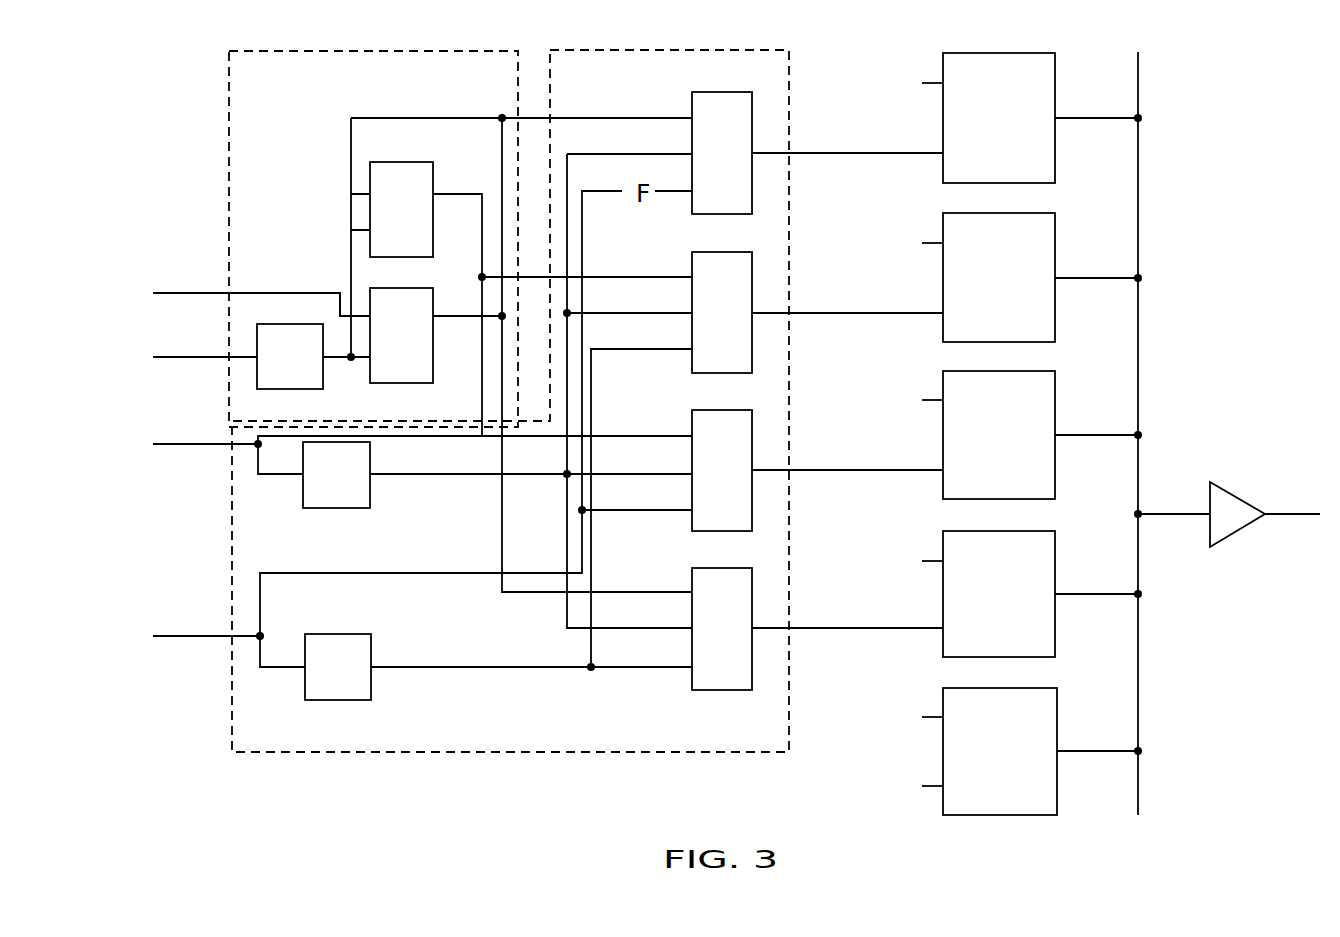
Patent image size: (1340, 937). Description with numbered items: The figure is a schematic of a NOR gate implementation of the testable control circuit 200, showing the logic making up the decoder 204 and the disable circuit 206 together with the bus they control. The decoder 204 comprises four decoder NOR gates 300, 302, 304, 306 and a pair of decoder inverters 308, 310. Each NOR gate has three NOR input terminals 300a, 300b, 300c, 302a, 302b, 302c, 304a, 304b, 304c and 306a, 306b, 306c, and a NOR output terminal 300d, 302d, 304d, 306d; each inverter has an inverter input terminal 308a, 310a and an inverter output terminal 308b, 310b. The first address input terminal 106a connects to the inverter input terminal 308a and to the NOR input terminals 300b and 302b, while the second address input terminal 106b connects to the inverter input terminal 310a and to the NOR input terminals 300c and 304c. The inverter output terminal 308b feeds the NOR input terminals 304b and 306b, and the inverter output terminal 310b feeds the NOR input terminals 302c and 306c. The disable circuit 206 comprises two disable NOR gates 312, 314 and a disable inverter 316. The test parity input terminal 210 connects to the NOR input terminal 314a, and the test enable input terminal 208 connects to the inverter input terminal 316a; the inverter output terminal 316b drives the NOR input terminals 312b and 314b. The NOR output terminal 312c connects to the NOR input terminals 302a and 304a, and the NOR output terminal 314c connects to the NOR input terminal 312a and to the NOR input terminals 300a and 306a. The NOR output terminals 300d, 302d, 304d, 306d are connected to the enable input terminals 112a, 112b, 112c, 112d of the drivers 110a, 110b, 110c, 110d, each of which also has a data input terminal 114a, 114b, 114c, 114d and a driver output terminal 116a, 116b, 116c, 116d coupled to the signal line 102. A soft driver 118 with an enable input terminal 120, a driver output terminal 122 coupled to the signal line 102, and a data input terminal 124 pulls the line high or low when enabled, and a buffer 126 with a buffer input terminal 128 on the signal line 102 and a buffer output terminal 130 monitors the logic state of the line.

The testable control circuit 200 is at (190, 100).
The decoder 204 is at (700, 50).
The disable circuit 206 is at (410, 51).
The test enable input terminal 208 is at (206, 356).
The test parity input terminal 210 is at (196, 292).
The first address input terminal 106a is at (216, 443).
The second address input terminal 106b is at (218, 635).
The signal line 102 is at (1140, 96).
The driver 110a is at (975, 53).
The driver 110b is at (975, 213).
The driver 110c is at (975, 371).
The driver 110d is at (975, 531).
The enable input terminal 112a is at (926, 152).
The enable input terminal 112b is at (926, 312).
The enable input terminal 112c is at (926, 468).
The enable input terminal 112d is at (926, 627).
The data input terminal 114a is at (926, 82).
The data input terminal 114b is at (926, 242).
The data input terminal 114c is at (926, 399).
The data input terminal 114d is at (926, 560).
The driver output terminal 116a is at (1100, 98).
The driver output terminal 116b is at (1100, 258).
The driver output terminal 116c is at (1100, 415).
The driver output terminal 116d is at (1100, 575).
The soft driver 118 is at (975, 688).
The enable input terminal 120 is at (926, 785).
The driver output terminal 122 is at (1082, 738).
The data input terminal 124 is at (926, 716).
The buffer 126 is at (1225, 492).
The buffer input terminal 128 is at (1195, 512).
The buffer output terminal 130 is at (1300, 512).
The first decoder NOR gate 300 is at (700, 92).
The NOR input terminal 300a is at (668, 117).
The NOR input terminal 300b is at (668, 153).
The NOR input terminal 300c is at (668, 190).
The NOR output terminal 300d is at (780, 152).
The second decoder NOR gate 302 is at (755, 252).
The NOR input terminal 302a is at (668, 276).
The NOR input terminal 302b is at (668, 312).
The NOR input terminal 302c is at (668, 348).
The NOR output terminal 302d is at (780, 312).
The third decoder NOR gate 304 is at (755, 410).
The NOR input terminal 304a is at (668, 435).
The NOR input terminal 304b is at (668, 473).
The NOR input terminal 304c is at (668, 509).
The NOR output terminal 304d is at (780, 469).
The fourth decoder NOR gate 306 is at (755, 568).
The NOR input terminal 306a is at (668, 591).
The NOR input terminal 306b is at (668, 627).
The NOR input terminal 306c is at (668, 666).
The NOR output terminal 306d is at (780, 627).
The first decoder inverter 308 is at (372, 446).
The inverter input terminal 308a is at (288, 478).
The inverter output terminal 308b is at (390, 478).
The second decoder inverter 310 is at (372, 638).
The inverter input terminal 310a is at (288, 670).
The inverter output terminal 310b is at (390, 670).
The first disable NOR gate 312 is at (400, 162).
The NOR input terminal 312a is at (350, 194).
The NOR input terminal 312b is at (350, 230).
The NOR output terminal 312c is at (464, 174).
The second disable NOR gate 314 is at (395, 288).
The NOR input terminal 314a is at (340, 296).
The NOR input terminal 314b is at (362, 360).
The NOR output terminal 314c is at (447, 320).
The disable inverter 316 is at (262, 324).
The inverter input terminal 316a is at (248, 358).
The inverter output terminal 316b is at (338, 352).